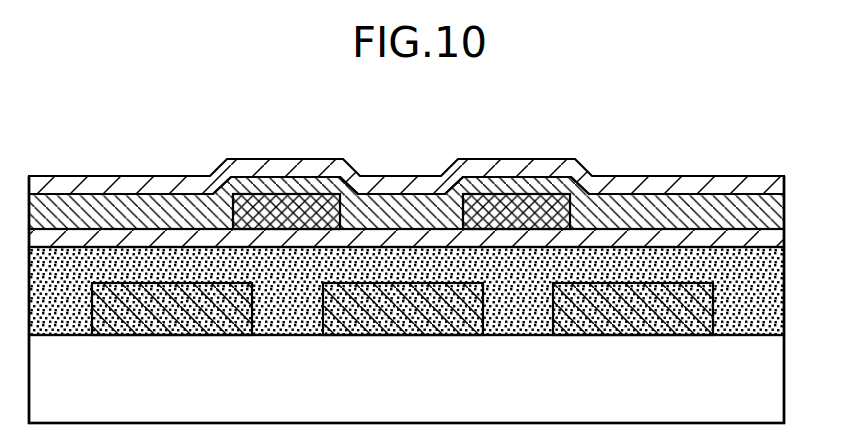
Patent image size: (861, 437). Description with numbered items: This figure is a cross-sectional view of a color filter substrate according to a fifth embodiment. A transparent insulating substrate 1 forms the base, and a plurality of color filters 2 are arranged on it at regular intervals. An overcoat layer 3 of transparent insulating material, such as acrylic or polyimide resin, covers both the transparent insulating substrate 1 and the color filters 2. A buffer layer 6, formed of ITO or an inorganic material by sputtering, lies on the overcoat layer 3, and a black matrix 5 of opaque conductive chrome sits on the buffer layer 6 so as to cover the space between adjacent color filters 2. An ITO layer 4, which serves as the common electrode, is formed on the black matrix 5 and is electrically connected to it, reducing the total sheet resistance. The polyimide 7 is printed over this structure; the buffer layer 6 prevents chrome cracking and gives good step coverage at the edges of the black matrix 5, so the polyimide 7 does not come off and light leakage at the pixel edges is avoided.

The transparent insulating substrate 1 is at (777, 381).
The color filters 2 is at (172, 315).
The overcoat layer 3 is at (777, 294).
The ITO layer 4 is at (777, 214).
The black matrix 5 is at (290, 198).
The buffer layer 6 is at (777, 241).
The polyimide 7 is at (777, 191).